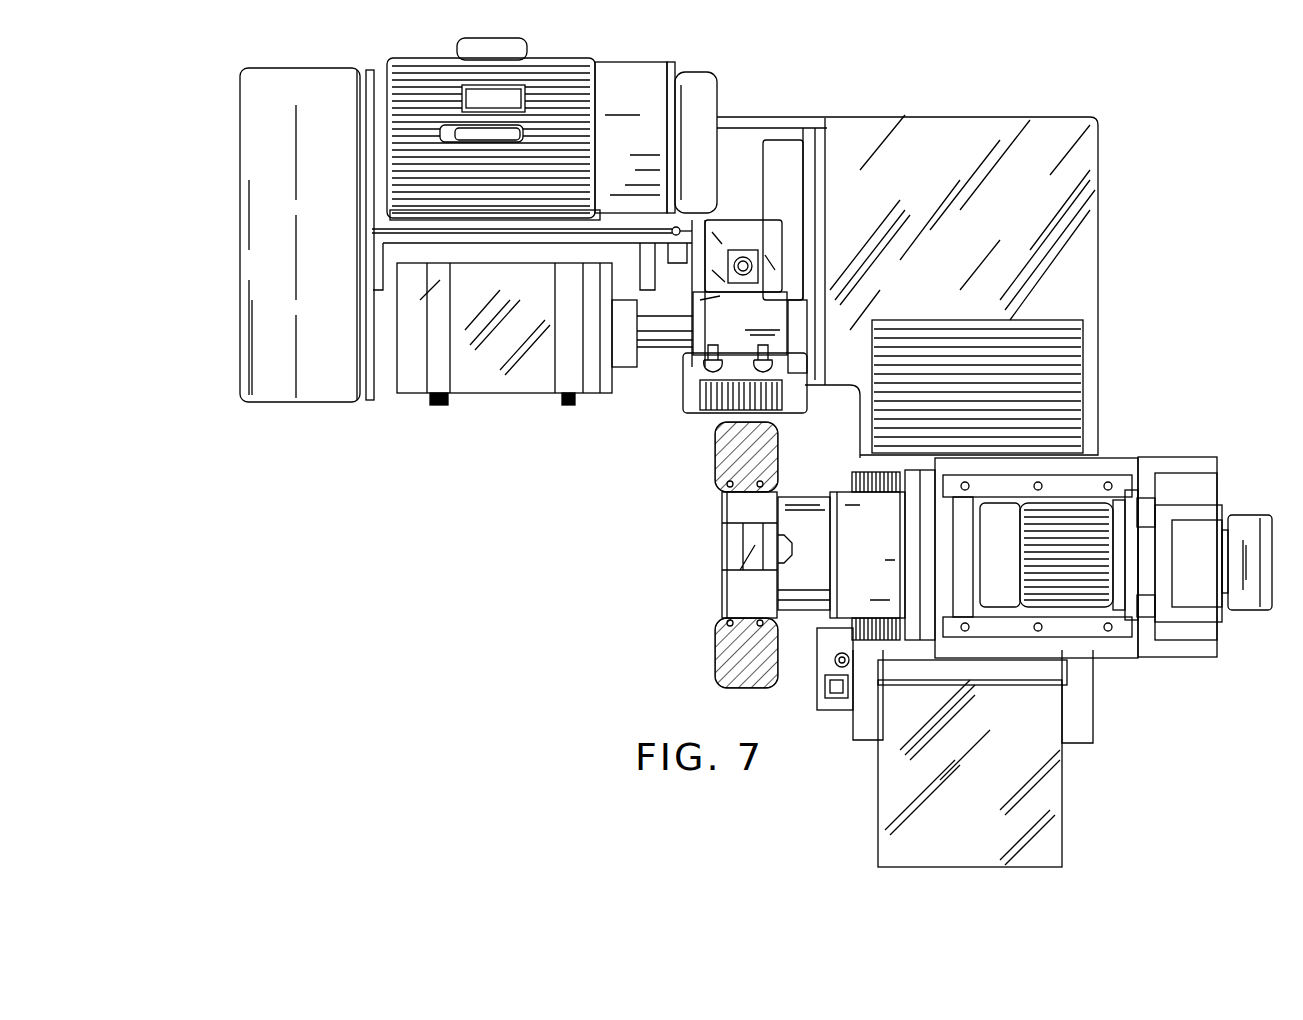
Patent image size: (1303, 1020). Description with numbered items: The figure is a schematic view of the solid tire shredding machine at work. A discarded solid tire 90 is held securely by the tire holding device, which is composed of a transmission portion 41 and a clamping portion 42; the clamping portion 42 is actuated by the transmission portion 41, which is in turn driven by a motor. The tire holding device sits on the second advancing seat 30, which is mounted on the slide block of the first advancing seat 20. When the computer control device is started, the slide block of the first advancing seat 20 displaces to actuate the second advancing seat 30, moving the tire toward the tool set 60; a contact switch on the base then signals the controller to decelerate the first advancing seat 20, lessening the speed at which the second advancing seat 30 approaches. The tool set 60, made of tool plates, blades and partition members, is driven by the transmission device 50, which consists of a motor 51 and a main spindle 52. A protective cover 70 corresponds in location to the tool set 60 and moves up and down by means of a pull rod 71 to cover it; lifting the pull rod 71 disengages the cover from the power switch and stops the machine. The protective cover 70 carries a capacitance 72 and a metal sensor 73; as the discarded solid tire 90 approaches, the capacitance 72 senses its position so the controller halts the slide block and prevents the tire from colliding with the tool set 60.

The first advancing seat 20 is at (1030, 800).
The second advancing seat 30 is at (1172, 640).
The transmission portion 41 is at (1062, 505).
The clamping portion 42 is at (748, 555).
The transmission device 50 is at (148, 226).
The motor 51 is at (390, 207).
The main spindle 52 is at (430, 292).
The tool set 60 is at (712, 455).
The protective cover 70 is at (713, 325).
The pull rod 71 is at (745, 262).
The capacitance 72 is at (790, 412).
The metal sensor 73 is at (710, 395).
The discarded solid tire 90 is at (716, 483).